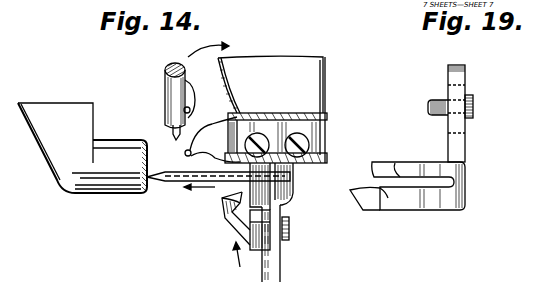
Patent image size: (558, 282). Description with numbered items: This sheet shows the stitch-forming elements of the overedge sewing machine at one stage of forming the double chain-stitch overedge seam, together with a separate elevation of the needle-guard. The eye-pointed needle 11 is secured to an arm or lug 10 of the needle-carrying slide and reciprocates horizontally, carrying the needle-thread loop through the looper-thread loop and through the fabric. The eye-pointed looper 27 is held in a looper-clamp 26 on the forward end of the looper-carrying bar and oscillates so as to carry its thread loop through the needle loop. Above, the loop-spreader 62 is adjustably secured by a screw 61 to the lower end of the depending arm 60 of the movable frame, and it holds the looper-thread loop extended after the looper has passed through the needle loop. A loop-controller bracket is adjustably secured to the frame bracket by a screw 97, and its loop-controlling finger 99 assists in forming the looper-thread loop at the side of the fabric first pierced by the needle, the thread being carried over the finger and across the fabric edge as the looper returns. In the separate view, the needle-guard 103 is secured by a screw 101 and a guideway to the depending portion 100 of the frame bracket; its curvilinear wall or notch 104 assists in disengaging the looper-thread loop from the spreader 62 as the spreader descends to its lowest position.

In FIG. 14, the arm or lug 10 is at (120, 195).
In FIG. 14, the eye-pointed needle 11 is at (218, 170).
In FIG. 14, the looper-clamp 26 is at (165, 85).
In FIG. 14, the eye-pointed looper 27 is at (172, 132).
In FIG. 14, the depending arm 60 is at (293, 190).
In FIG. 14, the screw 61 is at (290, 237).
In FIG. 14, the loop-spreader 62 is at (228, 196).
In FIG. 14, the screw 97 is at (296, 133).
In FIG. 14, the loop-controlling finger 99 is at (185, 154).
In FIG. 14, the depending portion 100 is at (328, 101).
In FIG. 19, the screw 101 is at (474, 111).
In FIG. 19, the needle-guard 103 is at (463, 190).
In FIG. 19, the curvilinear wall or notch 104 is at (380, 212).